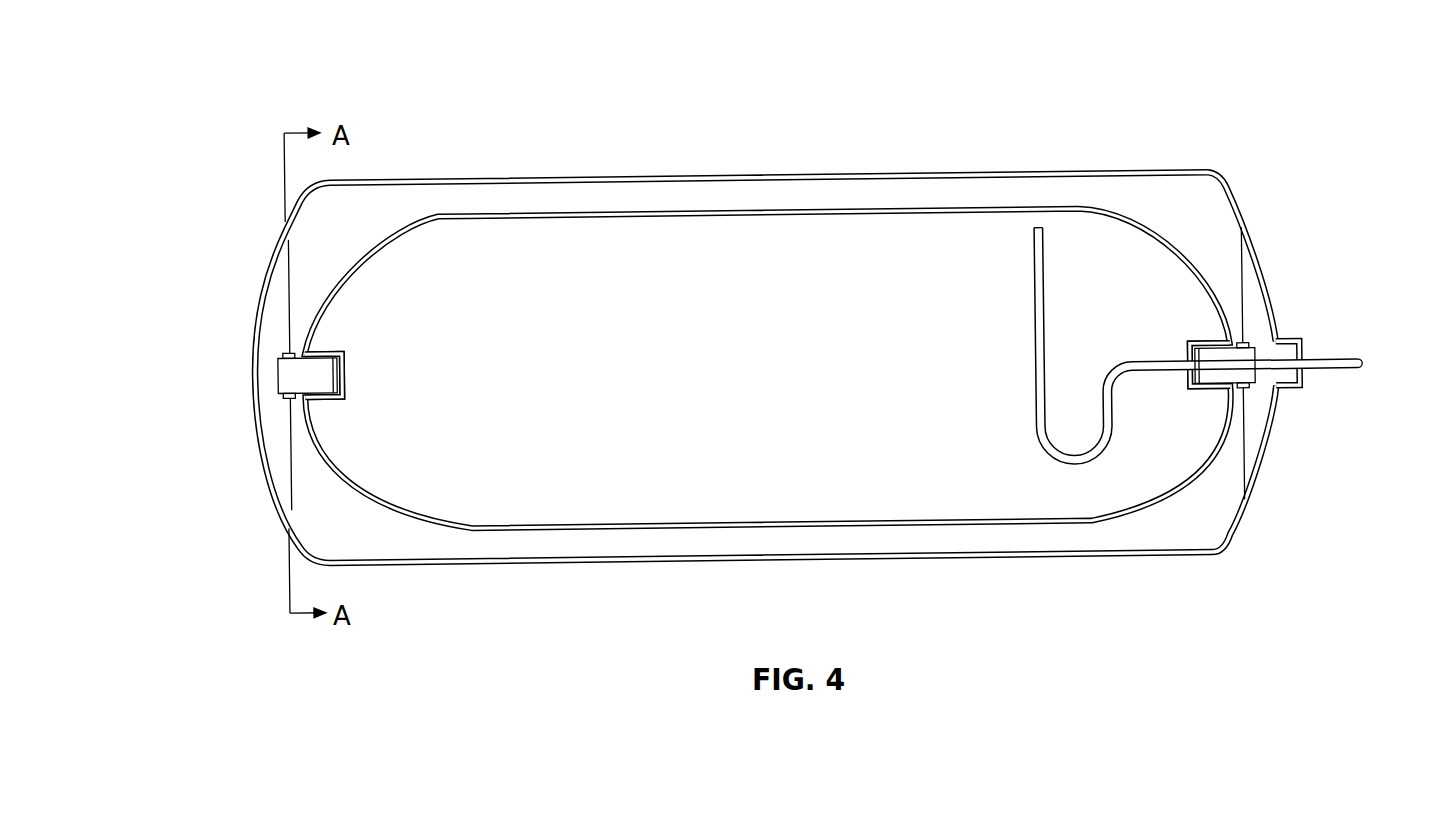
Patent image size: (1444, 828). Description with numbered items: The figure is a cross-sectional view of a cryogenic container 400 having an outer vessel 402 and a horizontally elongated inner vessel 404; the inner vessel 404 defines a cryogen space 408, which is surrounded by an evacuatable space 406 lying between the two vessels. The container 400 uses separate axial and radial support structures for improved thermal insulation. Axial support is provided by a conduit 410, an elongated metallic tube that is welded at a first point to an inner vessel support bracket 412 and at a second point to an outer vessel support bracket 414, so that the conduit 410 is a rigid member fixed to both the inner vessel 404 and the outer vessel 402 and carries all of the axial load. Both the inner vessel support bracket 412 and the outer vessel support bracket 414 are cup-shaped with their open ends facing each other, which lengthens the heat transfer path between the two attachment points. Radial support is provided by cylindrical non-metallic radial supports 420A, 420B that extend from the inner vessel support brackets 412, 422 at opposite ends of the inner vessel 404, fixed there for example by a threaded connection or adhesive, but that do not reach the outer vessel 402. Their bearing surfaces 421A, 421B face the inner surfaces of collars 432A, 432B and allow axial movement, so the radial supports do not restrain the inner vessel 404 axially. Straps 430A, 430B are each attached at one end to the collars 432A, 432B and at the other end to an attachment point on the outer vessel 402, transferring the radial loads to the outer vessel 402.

The container 400 is at (775, 311).
The outer vessel 402 is at (870, 174).
The inner vessel 404 is at (807, 211).
The evacuatable space 406 is at (370, 544).
The cryogen space 408 is at (706, 378).
The conduit 410 is at (1323, 380).
The inner vessel support bracket 412 is at (1217, 342).
The outer vessel support bracket 414 is at (1300, 340).
The non-metallic radial support 420A is at (1250, 342).
The non-metallic radial support 420B is at (283, 366).
The bearing surface 421A is at (1247, 387).
The bearing surface 421B is at (288, 352).
The inner vessel support bracket 422 is at (328, 352).
The strap 430A is at (1243, 257).
The strap 430B is at (293, 443).
The collar 432A is at (1245, 393).
The collar 432B is at (288, 400).